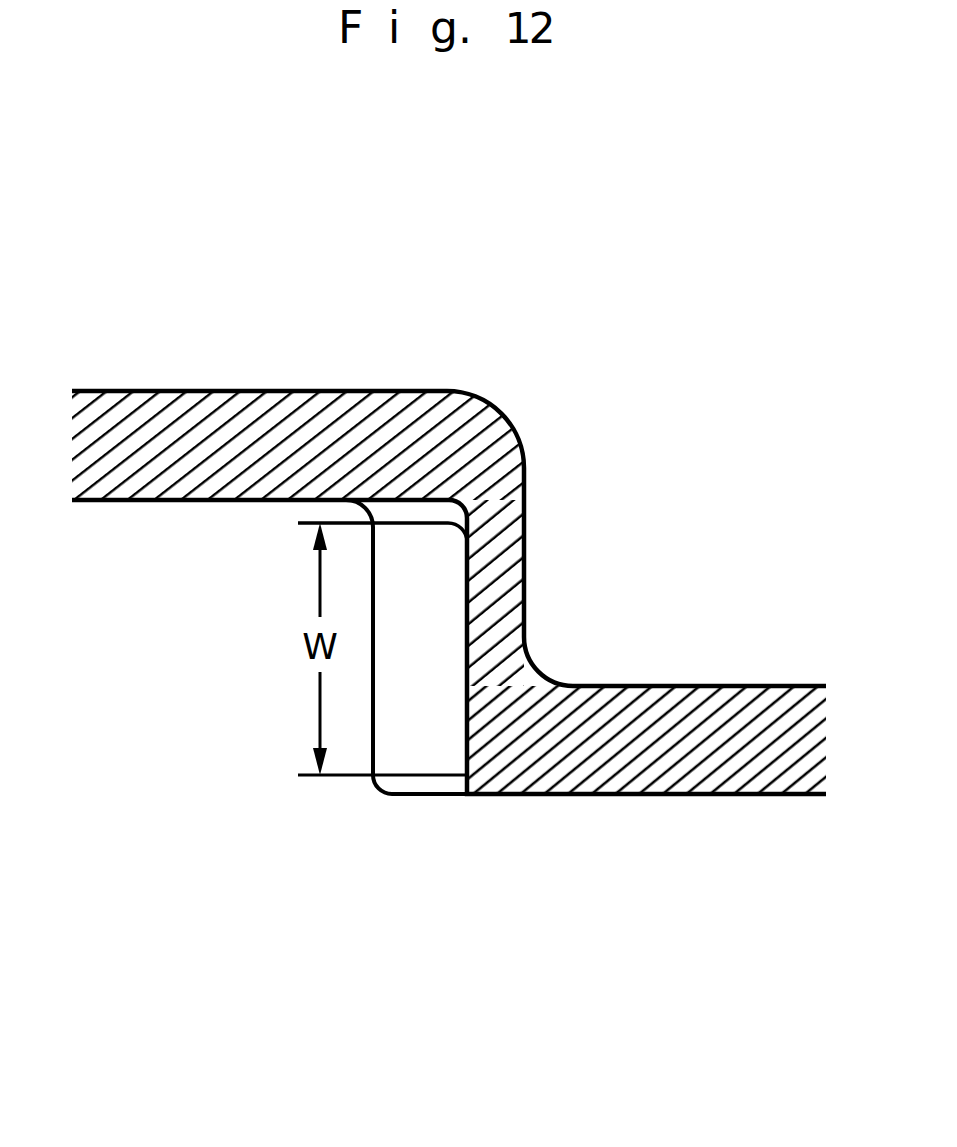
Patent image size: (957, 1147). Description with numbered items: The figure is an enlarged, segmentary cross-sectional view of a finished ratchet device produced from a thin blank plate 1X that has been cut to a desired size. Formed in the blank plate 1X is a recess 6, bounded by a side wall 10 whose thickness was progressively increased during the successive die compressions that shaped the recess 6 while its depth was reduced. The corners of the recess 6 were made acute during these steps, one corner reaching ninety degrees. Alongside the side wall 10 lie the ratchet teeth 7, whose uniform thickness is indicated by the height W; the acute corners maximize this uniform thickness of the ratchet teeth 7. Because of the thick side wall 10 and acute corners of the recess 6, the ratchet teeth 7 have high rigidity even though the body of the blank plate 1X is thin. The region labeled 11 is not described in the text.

The blank plate 1X is at (762, 702).
The recess 6 is at (190, 403).
The ratchet teeth 7 is at (412, 785).
The side wall 10 is at (510, 560).
The lower wall portion 11 is at (650, 795).